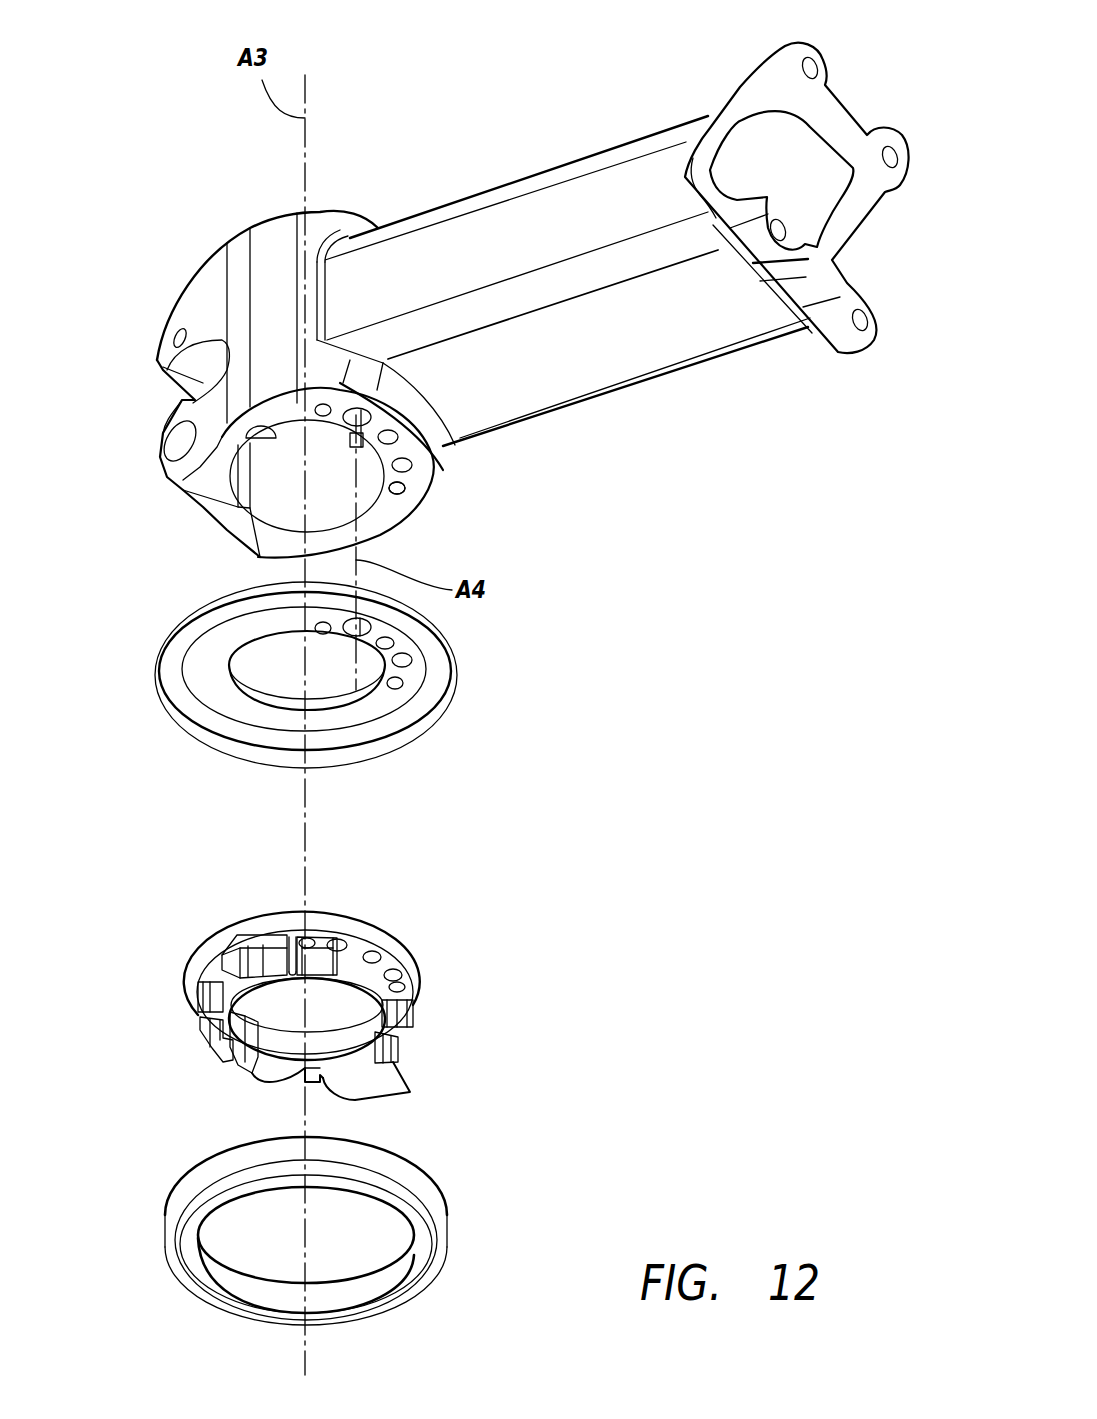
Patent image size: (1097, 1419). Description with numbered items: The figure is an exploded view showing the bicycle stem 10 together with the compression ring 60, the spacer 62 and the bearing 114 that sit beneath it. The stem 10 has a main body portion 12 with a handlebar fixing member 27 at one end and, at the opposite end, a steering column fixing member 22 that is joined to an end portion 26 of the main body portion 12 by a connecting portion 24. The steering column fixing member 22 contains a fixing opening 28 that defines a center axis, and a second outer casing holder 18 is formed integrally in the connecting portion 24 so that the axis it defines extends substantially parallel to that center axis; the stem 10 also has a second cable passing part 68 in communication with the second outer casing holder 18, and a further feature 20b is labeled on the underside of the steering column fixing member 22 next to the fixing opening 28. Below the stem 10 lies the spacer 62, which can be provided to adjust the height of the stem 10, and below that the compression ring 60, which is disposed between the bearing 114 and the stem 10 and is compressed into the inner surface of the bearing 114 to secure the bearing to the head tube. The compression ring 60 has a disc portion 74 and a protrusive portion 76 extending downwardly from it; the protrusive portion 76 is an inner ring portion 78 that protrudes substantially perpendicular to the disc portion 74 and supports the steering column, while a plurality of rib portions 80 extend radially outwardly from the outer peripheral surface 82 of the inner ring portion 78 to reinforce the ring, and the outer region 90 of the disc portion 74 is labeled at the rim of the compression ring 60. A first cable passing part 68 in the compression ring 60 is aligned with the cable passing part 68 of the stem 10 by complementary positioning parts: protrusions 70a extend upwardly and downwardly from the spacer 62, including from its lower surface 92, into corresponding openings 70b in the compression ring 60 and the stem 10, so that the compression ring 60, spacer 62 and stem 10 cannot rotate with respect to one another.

The bicycle stem 10 is at (647, 108).
The main body portion 12 is at (437, 240).
The second outer casing holder 18 is at (362, 435).
The hole 20b is at (312, 422).
The steering column fixing member 22 is at (208, 485).
The connecting portion 24 is at (385, 400).
The end portion 26 is at (412, 390).
The handlebar fixing member 27 is at (796, 92).
The fixing opening 28 is at (308, 473).
The compression ring 60 is at (478, 953).
The spacer 62 is at (492, 630).
The cable passing part 68 is at (362, 635).
The protrusion 70a is at (396, 690).
The opening 70b is at (398, 494).
The disc portion 74 is at (252, 925).
The protrusive portion 76 is at (213, 1030).
The inner ring portion 78 is at (280, 1052).
The rib portion 80 is at (410, 1092).
The outer peripheral surface 82 is at (413, 1008).
The outer surface 90 is at (202, 963).
The lower surface 92 is at (415, 693).
The bearing 114 is at (447, 1217).